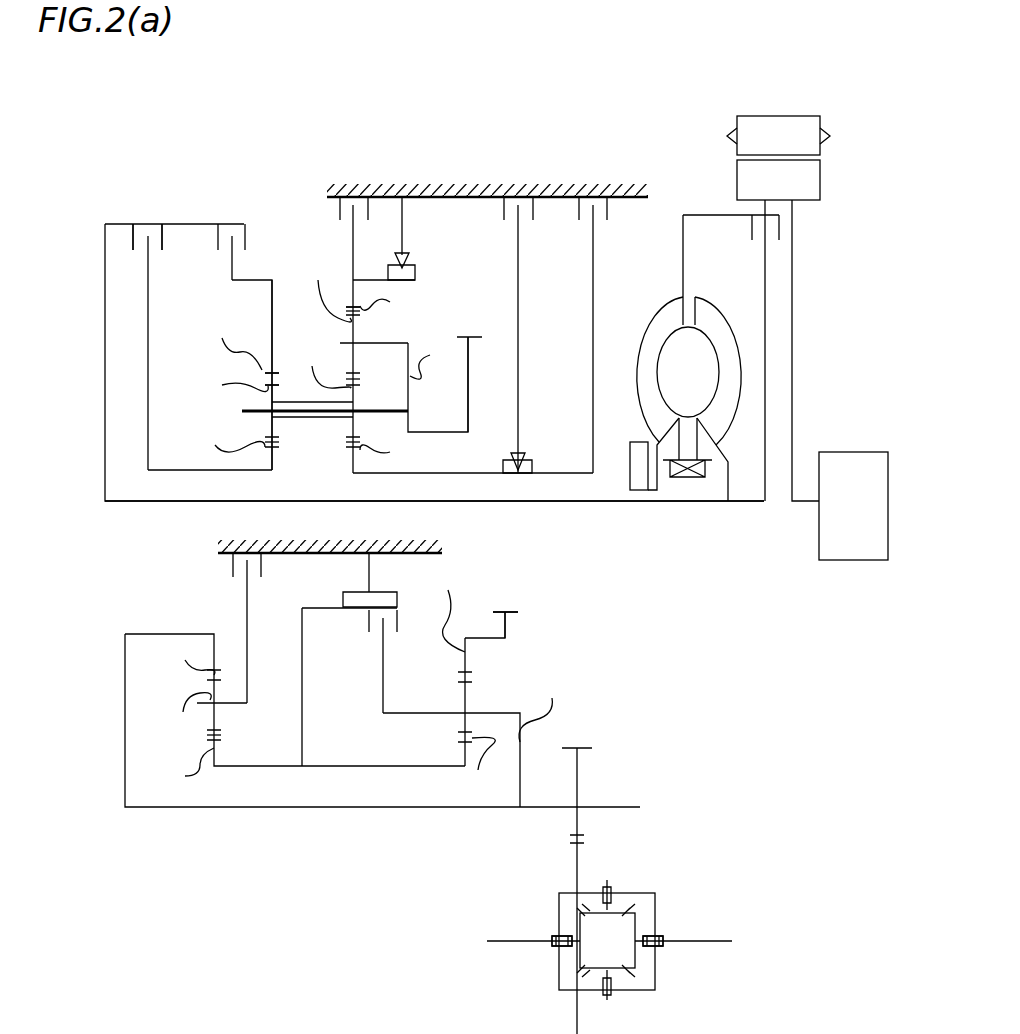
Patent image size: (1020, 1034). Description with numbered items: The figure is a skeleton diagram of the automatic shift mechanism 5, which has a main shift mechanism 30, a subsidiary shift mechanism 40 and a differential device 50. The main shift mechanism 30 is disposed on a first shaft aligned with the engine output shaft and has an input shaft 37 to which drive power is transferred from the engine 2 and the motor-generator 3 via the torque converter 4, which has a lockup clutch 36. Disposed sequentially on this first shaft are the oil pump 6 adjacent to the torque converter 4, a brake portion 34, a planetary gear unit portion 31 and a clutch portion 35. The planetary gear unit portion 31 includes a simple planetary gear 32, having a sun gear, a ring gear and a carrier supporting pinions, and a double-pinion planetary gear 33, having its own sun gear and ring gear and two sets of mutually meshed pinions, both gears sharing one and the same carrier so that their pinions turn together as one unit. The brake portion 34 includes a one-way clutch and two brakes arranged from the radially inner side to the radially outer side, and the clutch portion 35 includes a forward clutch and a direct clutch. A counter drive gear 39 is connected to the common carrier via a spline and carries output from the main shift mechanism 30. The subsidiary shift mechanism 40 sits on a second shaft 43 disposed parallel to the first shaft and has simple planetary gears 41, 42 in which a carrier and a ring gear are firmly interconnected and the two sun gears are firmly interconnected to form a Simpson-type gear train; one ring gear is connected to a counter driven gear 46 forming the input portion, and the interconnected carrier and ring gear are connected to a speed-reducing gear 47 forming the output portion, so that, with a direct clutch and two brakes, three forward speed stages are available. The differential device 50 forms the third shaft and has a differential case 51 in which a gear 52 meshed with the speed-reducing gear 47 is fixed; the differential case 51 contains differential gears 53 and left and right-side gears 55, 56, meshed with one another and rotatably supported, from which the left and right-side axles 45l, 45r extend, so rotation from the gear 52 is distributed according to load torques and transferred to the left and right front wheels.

The engine 2 is at (852, 452).
The motor-generator 3 is at (812, 116).
The torque converter 4 is at (671, 232).
The automatic shift mechanism 5 is at (456, 105).
The oil pump 6 is at (637, 442).
The main shift mechanism 30 is at (97, 320).
The planetary gear unit portion 31 is at (302, 270).
The simple planetary gear 32 is at (265, 280).
The double-pinion planetary gear 33 is at (342, 255).
The brake portion 34 is at (489, 276).
The clutch portion 35 is at (125, 185).
The lockup clutch 36 is at (757, 243).
The input shaft 37 is at (548, 503).
The counter drive gear 39 is at (470, 355).
The subsidiary shift mechanism 40 is at (344, 683).
The simple planetary gear 41 is at (487, 685).
The simple planetary gear 42 is at (284, 667).
The second shaft 43 is at (400, 810).
The counter driven gear 46 is at (517, 611).
The speed-reducing gear 47 is at (580, 766).
The differential device 50 is at (619, 926).
The differential case 51 is at (645, 995).
The gear 52 is at (580, 855).
The differential gears 53 is at (615, 970).
The left side gear 55 is at (578, 924).
The right side gear 56 is at (640, 920).
The left-side axle 45l is at (512, 942).
The right-side axle 45r is at (697, 943).